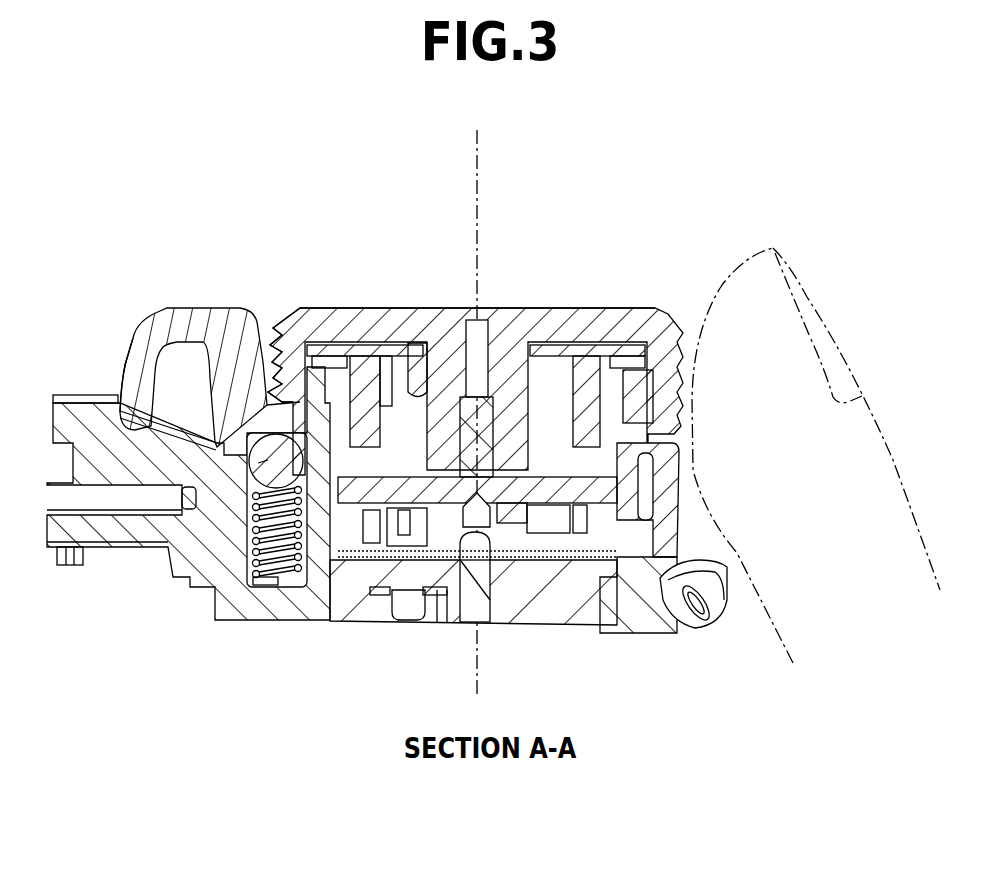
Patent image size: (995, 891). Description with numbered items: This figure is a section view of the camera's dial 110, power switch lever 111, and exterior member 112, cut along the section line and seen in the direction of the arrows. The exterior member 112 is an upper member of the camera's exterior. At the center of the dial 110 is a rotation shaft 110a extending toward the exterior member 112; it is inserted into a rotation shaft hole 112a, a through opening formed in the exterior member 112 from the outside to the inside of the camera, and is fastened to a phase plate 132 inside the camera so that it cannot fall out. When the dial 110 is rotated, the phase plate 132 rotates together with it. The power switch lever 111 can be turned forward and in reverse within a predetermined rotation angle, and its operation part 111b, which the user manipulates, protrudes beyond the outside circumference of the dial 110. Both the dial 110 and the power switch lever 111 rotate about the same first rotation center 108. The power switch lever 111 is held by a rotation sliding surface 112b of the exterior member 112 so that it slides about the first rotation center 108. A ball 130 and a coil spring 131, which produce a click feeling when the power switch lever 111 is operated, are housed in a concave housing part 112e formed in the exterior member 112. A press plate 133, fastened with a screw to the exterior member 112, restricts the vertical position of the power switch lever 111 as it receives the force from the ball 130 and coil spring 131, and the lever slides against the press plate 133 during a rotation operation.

The first rotation center 108 is at (481, 148).
The dial 110 is at (590, 307).
The rotation shaft 110a is at (517, 307).
The power switch lever 111 is at (194, 320).
The operation part 111b is at (128, 365).
The exterior member 112 is at (83, 445).
The rotation shaft hole 112a is at (414, 345).
The rotation sliding surface 112b is at (289, 385).
The housing part 112e is at (298, 585).
The ball 130 is at (247, 468).
The coil spring 131 is at (232, 590).
The phase plate 132 is at (595, 490).
The press plate 133 is at (652, 398).